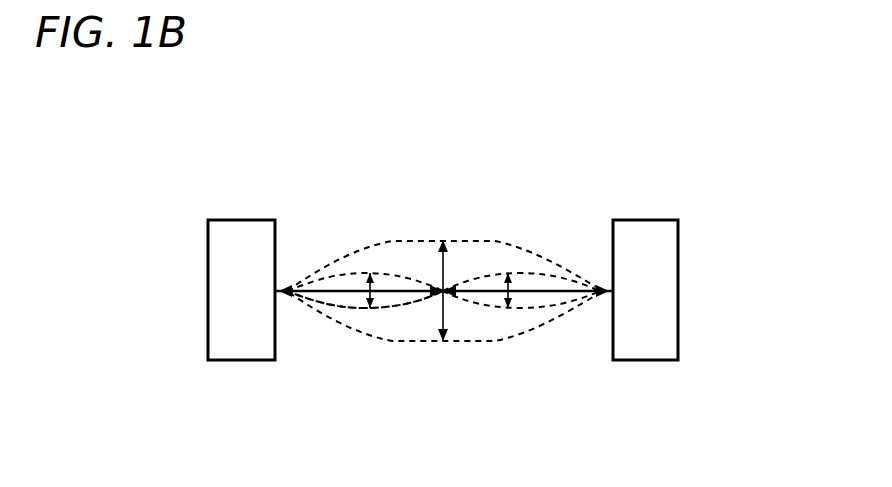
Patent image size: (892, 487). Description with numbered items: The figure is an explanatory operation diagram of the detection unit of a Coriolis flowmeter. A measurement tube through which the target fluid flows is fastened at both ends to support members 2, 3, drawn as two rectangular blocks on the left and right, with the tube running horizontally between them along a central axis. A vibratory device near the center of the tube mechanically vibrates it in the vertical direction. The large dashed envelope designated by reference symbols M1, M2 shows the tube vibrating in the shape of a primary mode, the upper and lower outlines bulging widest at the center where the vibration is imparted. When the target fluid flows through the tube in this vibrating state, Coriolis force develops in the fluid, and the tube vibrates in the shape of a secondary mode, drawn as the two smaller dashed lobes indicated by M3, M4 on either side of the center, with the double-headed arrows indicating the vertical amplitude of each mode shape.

The support member 2 is at (248, 220).
The support member 3 is at (638, 220).
The primary mode vibration shape M1 is at (484, 240).
The primary mode vibration shape M2 is at (505, 341).
The secondary mode vibration shape M3 is at (395, 273).
The secondary mode vibration shape M4 is at (378, 308).